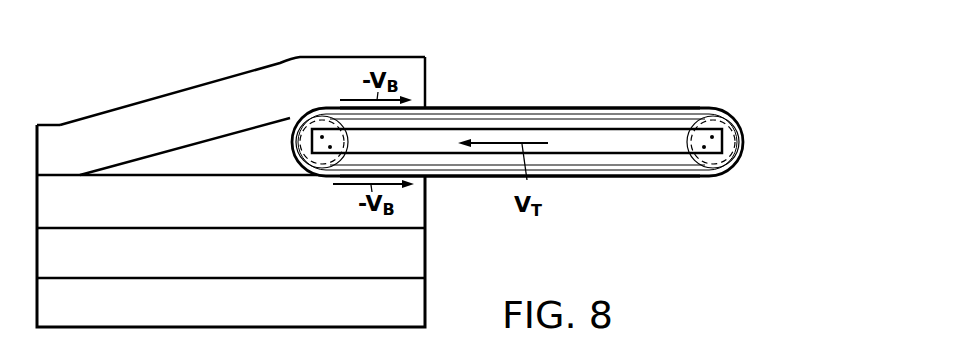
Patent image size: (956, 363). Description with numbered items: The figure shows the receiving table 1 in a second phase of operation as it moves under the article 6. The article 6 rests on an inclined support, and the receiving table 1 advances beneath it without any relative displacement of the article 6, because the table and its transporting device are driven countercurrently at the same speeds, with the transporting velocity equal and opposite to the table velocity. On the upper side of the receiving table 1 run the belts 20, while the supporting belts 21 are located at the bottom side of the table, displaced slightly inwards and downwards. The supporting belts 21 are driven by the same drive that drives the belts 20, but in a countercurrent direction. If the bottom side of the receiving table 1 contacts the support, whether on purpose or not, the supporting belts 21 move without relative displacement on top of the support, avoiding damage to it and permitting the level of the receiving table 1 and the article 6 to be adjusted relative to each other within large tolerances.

The receiving table 1 is at (517, 127).
The article 6 is at (192, 127).
The belts 20 is at (510, 107).
The supporting belts 21 is at (620, 178).